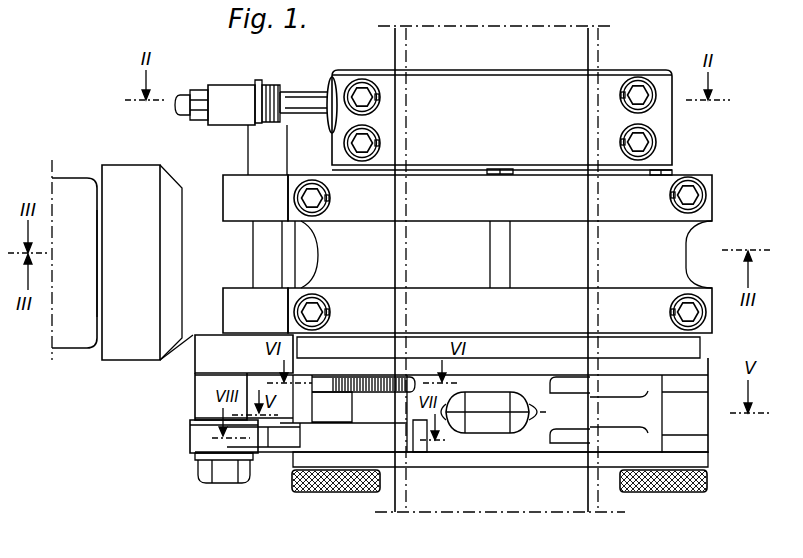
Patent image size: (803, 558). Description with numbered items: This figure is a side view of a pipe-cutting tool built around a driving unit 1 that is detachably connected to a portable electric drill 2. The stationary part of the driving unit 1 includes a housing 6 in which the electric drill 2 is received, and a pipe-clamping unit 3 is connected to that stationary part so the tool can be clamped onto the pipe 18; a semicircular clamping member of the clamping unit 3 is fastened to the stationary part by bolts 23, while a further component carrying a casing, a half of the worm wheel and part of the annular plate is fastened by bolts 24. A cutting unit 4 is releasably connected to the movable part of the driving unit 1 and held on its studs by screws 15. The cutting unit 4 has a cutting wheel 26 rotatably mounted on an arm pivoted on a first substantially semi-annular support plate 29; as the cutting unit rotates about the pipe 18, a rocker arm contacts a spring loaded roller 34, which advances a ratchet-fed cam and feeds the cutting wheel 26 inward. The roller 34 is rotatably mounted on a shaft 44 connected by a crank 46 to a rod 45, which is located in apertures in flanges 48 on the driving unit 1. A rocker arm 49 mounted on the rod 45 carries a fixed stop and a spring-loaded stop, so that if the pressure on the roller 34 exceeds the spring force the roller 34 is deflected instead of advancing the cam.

The driving unit 1 is at (718, 197).
The portable electric drill 2 is at (118, 273).
The pipe-clamping unit 3 is at (680, 143).
The cutting unit 4 is at (715, 452).
The housing 6 is at (125, 348).
The screws 15 is at (693, 486).
The pipe 18 is at (598, 40).
The bolts 23 is at (364, 97).
The bolts 24 is at (690, 312).
The cutting wheel 26 is at (485, 428).
The first substantially semi-annular support plate 29 is at (552, 456).
The spring loaded roller 34 is at (198, 433).
The shaft 44 is at (207, 397).
The rod 45 is at (262, 258).
The crank 46 is at (214, 362).
The flanges 48 is at (266, 209).
The rocker arm 49 is at (238, 97).